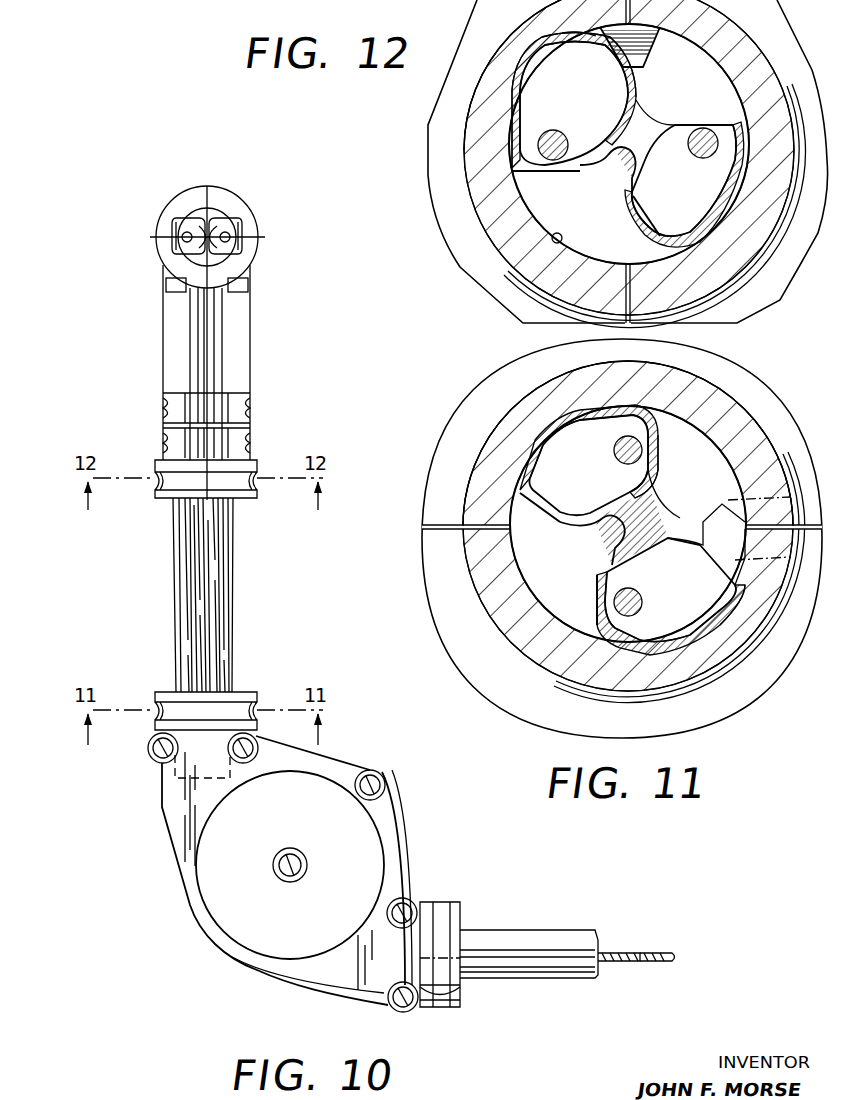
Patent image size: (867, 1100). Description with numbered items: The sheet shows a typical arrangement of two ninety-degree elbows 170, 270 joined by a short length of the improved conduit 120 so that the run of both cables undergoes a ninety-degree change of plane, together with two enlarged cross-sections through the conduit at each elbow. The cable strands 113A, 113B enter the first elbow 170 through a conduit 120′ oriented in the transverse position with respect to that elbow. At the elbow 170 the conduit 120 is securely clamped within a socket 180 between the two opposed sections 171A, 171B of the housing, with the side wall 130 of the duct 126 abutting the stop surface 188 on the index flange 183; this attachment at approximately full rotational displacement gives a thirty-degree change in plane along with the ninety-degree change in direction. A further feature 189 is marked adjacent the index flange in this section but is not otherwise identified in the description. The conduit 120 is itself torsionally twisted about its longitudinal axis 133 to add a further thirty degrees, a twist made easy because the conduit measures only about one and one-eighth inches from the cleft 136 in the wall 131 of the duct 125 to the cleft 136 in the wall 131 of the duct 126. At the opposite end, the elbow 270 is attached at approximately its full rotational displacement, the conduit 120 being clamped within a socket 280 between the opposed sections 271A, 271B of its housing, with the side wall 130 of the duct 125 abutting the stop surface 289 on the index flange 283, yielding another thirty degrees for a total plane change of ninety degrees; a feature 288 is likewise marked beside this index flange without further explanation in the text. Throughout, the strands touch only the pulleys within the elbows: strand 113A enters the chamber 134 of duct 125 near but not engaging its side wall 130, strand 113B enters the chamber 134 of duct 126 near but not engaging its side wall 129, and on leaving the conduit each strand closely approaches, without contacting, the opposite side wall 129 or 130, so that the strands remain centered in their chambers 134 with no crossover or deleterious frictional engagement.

In FIG. 12, the conduit 120 is at (609, 196).
In FIG. 11, the conduit 120 is at (578, 573).
In FIG. 10, the conduit 120 is at (231, 625).
In FIG. 10, the conduit 120′ is at (511, 926).
In FIG. 12, the cable strand 113A is at (554, 132).
In FIG. 11, the cable strand 113A is at (620, 462).
In FIG. 10, the cable strand 113A is at (182, 238).
In FIG. 12, the cable strand 113B is at (697, 154).
In FIG. 11, the cable strand 113B is at (640, 594).
In FIG. 10, the cable strand 113B is at (232, 238).
In FIG. 12, the duct 125 is at (508, 140).
In FIG. 11, the duct 125 is at (512, 473).
In FIG. 10, the duct 125 is at (185, 617).
In FIG. 12, the duct 126 is at (735, 229).
In FIG. 11, the duct 126 is at (677, 643).
In FIG. 10, the duct 126 is at (226, 581).
In FIG. 12, the side wall 129 is at (551, 172).
In FIG. 11, the side wall 129 is at (540, 505).
In FIG. 12, the side wall 130 is at (612, 58).
In FIG. 11, the side wall 130 is at (656, 460).
In FIG. 12, the wall 131 is at (528, 72).
In FIG. 11, the wall 131 is at (608, 412).
In FIG. 12, the longitudinal axis 133 is at (618, 160).
In FIG. 11, the longitudinal axis 133 is at (620, 532).
In FIG. 12, the chamber 134 is at (628, 139).
In FIG. 11, the chamber 134 is at (632, 528).
In FIG. 10, the chamber 134 is at (178, 224).
In FIG. 12, the cleft 136 is at (524, 98).
In FIG. 11, the cleft 136 is at (562, 448).
In FIG. 10, the cleft 136 is at (188, 682).
In FIG. 10, the elbow 170 is at (194, 923).
In FIG. 11, the housing section 171A is at (502, 624).
In FIG. 11, the housing section 171B is at (510, 415).
In FIG. 11, the socket 180 is at (681, 482).
In FIG. 11, the index flange 183 is at (722, 525).
In FIG. 11, the stop surface 188 is at (738, 566).
In FIG. 11, the pivot axis 189 is at (735, 504).
In FIG. 10, the elbow 270 is at (255, 345).
In FIG. 12, the housing section 271A is at (722, 268).
In FIG. 12, the housing section 271B is at (505, 236).
In FIG. 12, the socket 280 is at (553, 243).
In FIG. 12, the index flange 283 is at (662, 44).
In FIG. 12, the key 288 is at (656, 46).
In FIG. 12, the stop surface 289 is at (598, 38).